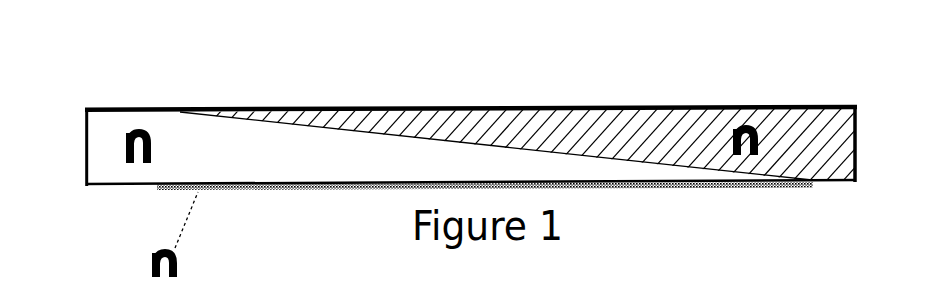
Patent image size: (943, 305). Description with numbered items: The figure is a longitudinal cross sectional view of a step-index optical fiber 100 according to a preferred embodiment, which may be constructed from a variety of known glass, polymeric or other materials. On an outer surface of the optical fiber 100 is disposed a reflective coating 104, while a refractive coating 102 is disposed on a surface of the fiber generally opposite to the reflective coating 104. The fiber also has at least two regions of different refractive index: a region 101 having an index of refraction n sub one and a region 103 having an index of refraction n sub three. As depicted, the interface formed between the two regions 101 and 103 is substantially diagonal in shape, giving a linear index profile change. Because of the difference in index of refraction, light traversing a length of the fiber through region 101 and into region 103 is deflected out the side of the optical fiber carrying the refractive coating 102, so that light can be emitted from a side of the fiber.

The optical fiber 100 is at (471, 130).
The region 101 is at (102, 138).
The refractive coating 102 is at (173, 187).
The region 103 is at (650, 147).
The reflective coating 104 is at (332, 107).